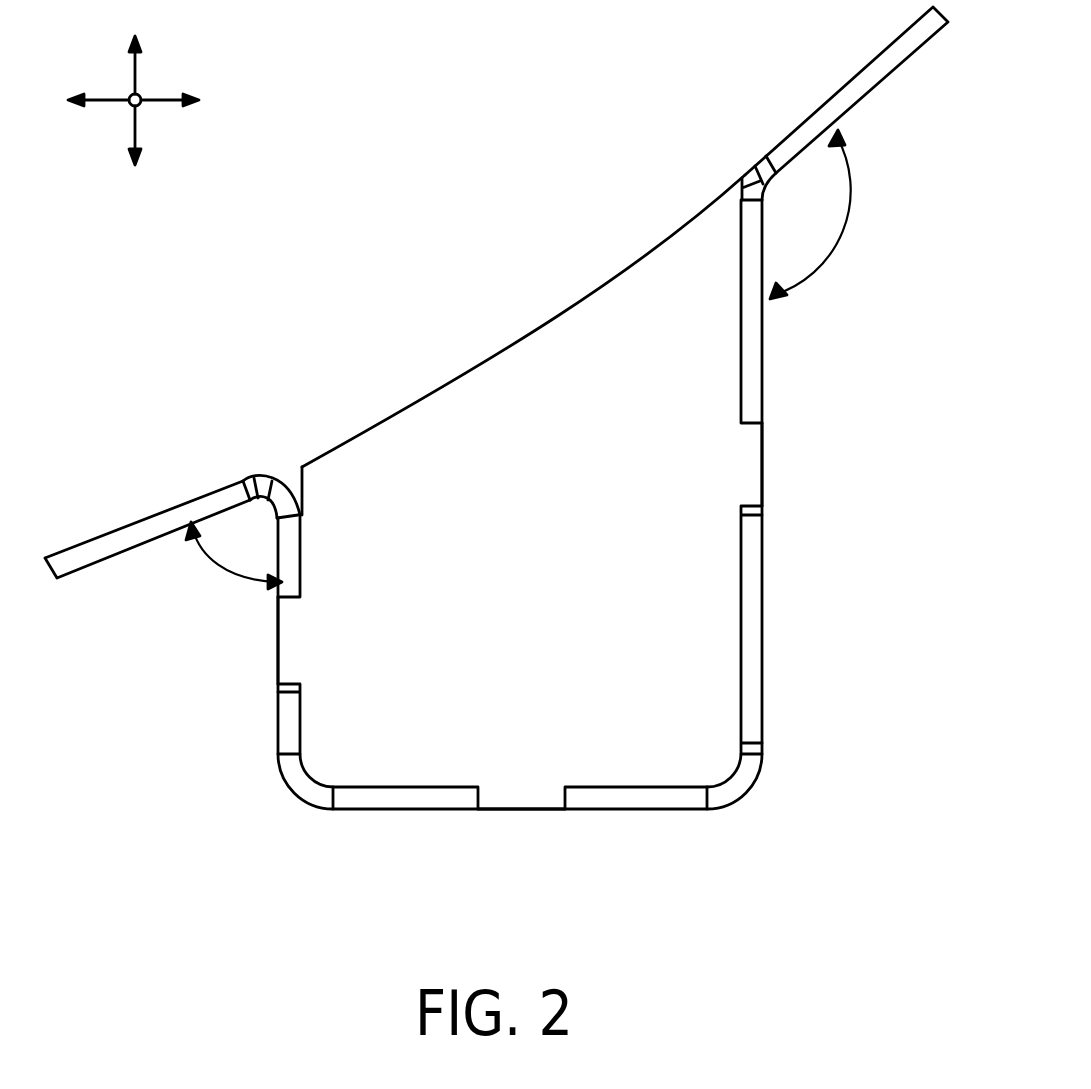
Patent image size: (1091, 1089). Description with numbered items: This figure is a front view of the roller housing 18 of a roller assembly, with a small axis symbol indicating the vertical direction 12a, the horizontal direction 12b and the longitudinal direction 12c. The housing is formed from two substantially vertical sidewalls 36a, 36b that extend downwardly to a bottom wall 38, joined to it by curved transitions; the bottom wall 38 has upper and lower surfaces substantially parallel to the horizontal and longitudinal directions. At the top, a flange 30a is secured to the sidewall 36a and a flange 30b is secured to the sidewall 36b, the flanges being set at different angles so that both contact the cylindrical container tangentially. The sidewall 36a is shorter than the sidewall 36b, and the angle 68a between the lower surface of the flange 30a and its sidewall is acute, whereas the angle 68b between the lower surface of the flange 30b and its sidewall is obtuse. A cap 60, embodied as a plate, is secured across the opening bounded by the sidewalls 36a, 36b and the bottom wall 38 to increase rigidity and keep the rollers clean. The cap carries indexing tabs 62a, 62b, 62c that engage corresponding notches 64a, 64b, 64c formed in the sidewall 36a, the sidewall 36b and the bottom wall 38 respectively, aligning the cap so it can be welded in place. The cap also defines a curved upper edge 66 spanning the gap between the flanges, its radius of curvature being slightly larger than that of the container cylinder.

The vertical direction 12a is at (130, 80).
The horizontal direction 12b is at (158, 98).
The longitudinal direction 12c is at (138, 105).
The roller housing 18 is at (273, 382).
The flange 30a is at (160, 527).
The flange 30b is at (862, 83).
The sidewall 36a is at (290, 738).
The sidewall 36b is at (748, 606).
The bottom wall 38 is at (667, 797).
The cap 60 is at (534, 504).
The tab 62a is at (290, 668).
The tab 62b is at (757, 457).
The tab 62c is at (516, 789).
The notch 64a is at (280, 697).
The notch 64b is at (750, 420).
The notch 64c is at (477, 795).
The upper edge 66 is at (505, 352).
The angle 68a is at (212, 565).
The angle 68b is at (847, 227).